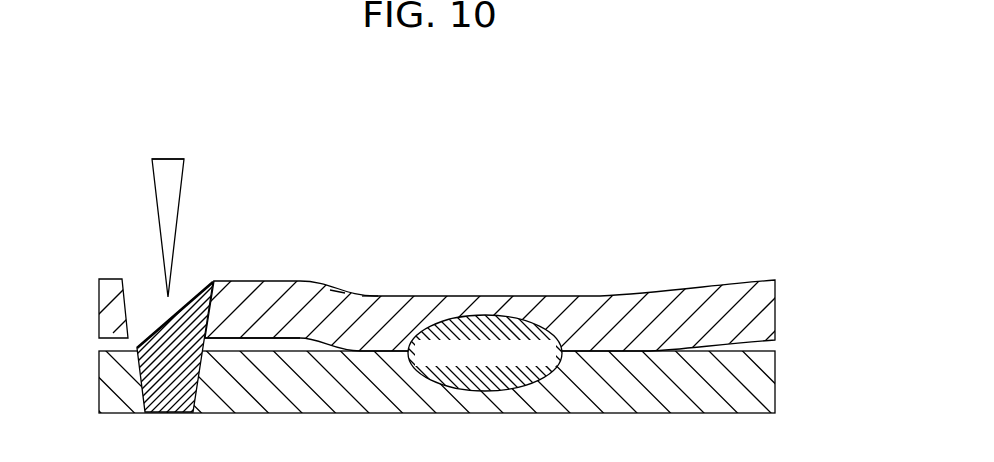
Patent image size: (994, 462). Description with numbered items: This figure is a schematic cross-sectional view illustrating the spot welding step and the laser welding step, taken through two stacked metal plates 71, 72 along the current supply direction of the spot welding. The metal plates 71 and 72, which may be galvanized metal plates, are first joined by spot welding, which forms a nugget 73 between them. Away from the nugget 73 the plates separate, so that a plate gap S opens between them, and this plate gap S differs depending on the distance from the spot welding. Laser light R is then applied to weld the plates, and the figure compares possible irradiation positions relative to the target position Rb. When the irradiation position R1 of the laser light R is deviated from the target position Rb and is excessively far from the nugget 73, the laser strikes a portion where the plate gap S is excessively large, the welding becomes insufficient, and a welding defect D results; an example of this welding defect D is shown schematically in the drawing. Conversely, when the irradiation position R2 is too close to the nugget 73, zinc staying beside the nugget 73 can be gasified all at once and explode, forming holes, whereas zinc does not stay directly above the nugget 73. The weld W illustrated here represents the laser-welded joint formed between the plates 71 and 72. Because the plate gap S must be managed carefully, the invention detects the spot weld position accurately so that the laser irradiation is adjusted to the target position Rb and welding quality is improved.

The metal plate 71 is at (768, 300).
The metal plate 72 is at (765, 380).
The nugget 73 is at (488, 373).
The plate gap S is at (277, 345).
The welding defect D is at (135, 298).
The laser light R is at (166, 199).
The irradiation position R1 is at (168, 150).
The target position Rb is at (337, 280).
The irradiation position R2 is at (370, 280).
The weld bead W is at (178, 345).